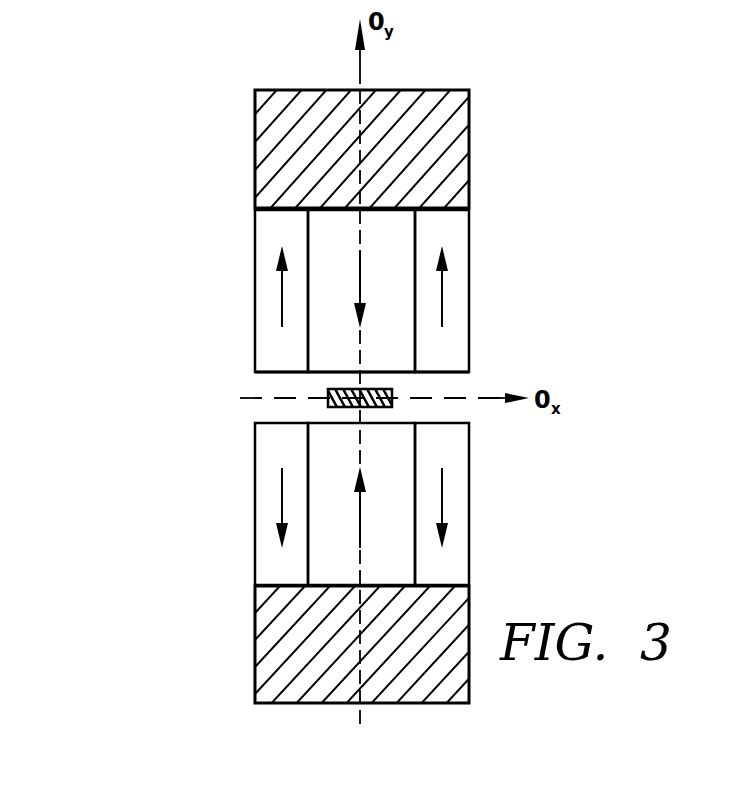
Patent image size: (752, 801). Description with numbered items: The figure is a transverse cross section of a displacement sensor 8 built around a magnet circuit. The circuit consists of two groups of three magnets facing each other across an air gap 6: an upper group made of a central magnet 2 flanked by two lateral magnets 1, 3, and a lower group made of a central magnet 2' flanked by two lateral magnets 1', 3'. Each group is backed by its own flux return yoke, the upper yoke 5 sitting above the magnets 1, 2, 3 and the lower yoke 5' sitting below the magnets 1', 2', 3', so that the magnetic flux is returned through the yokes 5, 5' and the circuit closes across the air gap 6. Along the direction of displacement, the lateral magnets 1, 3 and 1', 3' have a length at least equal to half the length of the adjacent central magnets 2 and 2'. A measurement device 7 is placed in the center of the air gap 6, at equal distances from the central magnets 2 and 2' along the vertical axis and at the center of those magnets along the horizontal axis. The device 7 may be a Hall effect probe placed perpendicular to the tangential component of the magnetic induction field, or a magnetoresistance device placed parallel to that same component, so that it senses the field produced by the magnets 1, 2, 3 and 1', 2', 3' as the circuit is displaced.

The lateral magnet 1 is at (244, 291).
The central magnet 2 is at (293, 291).
The lateral magnet 3 is at (488, 288).
The flux return yoke 5 is at (385, 149).
The air gap 6 is at (433, 380).
The measurement device 7 is at (329, 392).
The sensor 8 is at (325, 396).
The lateral magnet 1' is at (241, 503).
The central magnet 2' is at (294, 504).
The lateral magnet 3' is at (479, 504).
The flux return yoke 5' is at (388, 644).